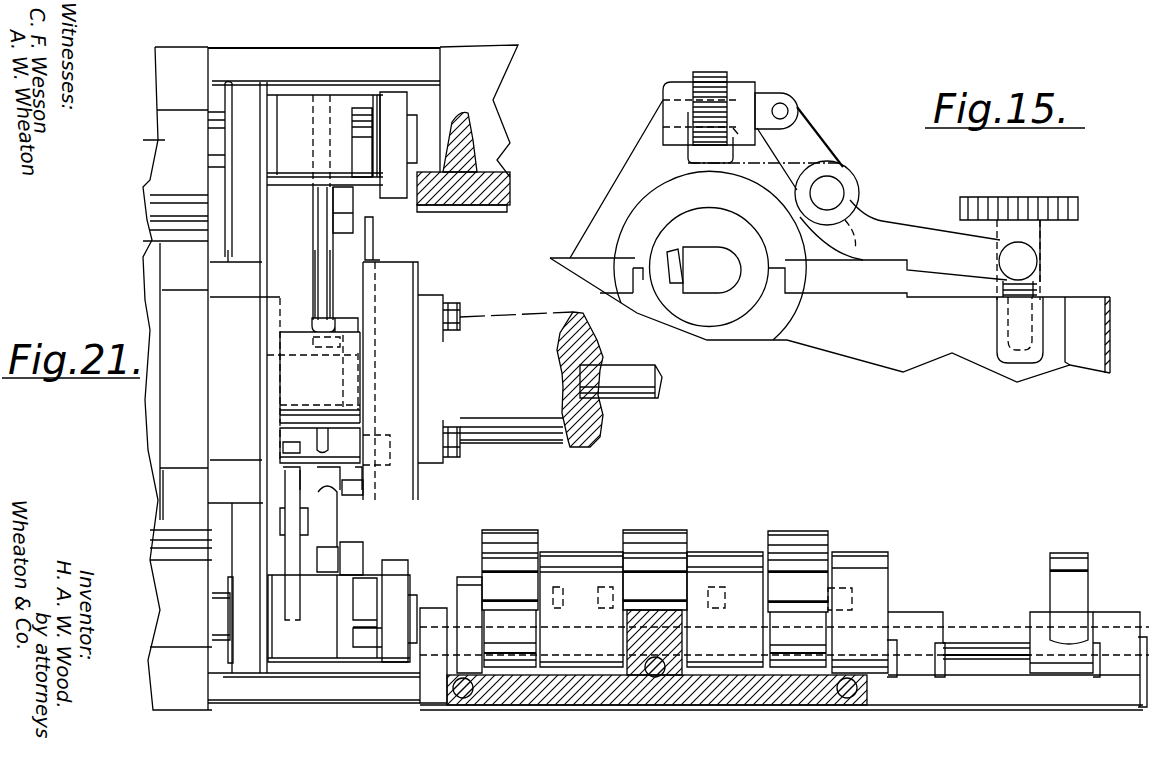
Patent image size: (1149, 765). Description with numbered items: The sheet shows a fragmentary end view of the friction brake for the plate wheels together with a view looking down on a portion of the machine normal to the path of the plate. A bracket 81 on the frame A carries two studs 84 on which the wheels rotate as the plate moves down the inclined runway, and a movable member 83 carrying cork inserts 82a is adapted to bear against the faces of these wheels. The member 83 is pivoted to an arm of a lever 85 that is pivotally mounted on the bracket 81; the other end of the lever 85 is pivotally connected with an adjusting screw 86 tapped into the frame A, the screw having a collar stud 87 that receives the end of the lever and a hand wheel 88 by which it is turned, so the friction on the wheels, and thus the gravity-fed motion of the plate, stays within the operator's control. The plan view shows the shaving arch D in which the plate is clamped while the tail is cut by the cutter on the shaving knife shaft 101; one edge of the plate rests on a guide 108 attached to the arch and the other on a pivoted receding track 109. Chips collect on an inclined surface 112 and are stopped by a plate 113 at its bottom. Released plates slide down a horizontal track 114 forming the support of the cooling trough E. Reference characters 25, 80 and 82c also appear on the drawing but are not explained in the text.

In FIG. 21, the cooling trough E is at (150, 142).
In FIG. 21, the horizontal track 114 is at (203, 188).
In FIG. 21, the plate 113 is at (367, 240).
In FIG. 21, the inclined surface 112 is at (400, 283).
In FIG. 21, the guide 108 is at (500, 212).
In FIG. 21, the shaving knife shaft 101 is at (567, 473).
In FIG. 21, the pivoted receding track 109 is at (600, 540).
In FIG. 21, the shaving arch D is at (500, 195).
In FIG. 21, the frame A is at (980, 720).
In FIG. 15, the frame A is at (880, 397).
In FIG. 15, the bracket 81 is at (637, 158).
In FIG. 15, the key 25 is at (667, 258).
In FIG. 15, the studs 84 is at (672, 63).
In FIG. 15, the roller 80 is at (717, 75).
In FIG. 15, the bracket 82c is at (733, 145).
In FIG. 15, the inserts 82a is at (737, 93).
In FIG. 15, the movable member 83 is at (743, 90).
In FIG. 15, the lever 85 is at (810, 145).
In FIG. 15, the hand wheel 88 is at (1022, 205).
In FIG. 15, the collar stud 87 is at (1043, 237).
In FIG. 15, the adjusting screw 86 is at (1035, 290).